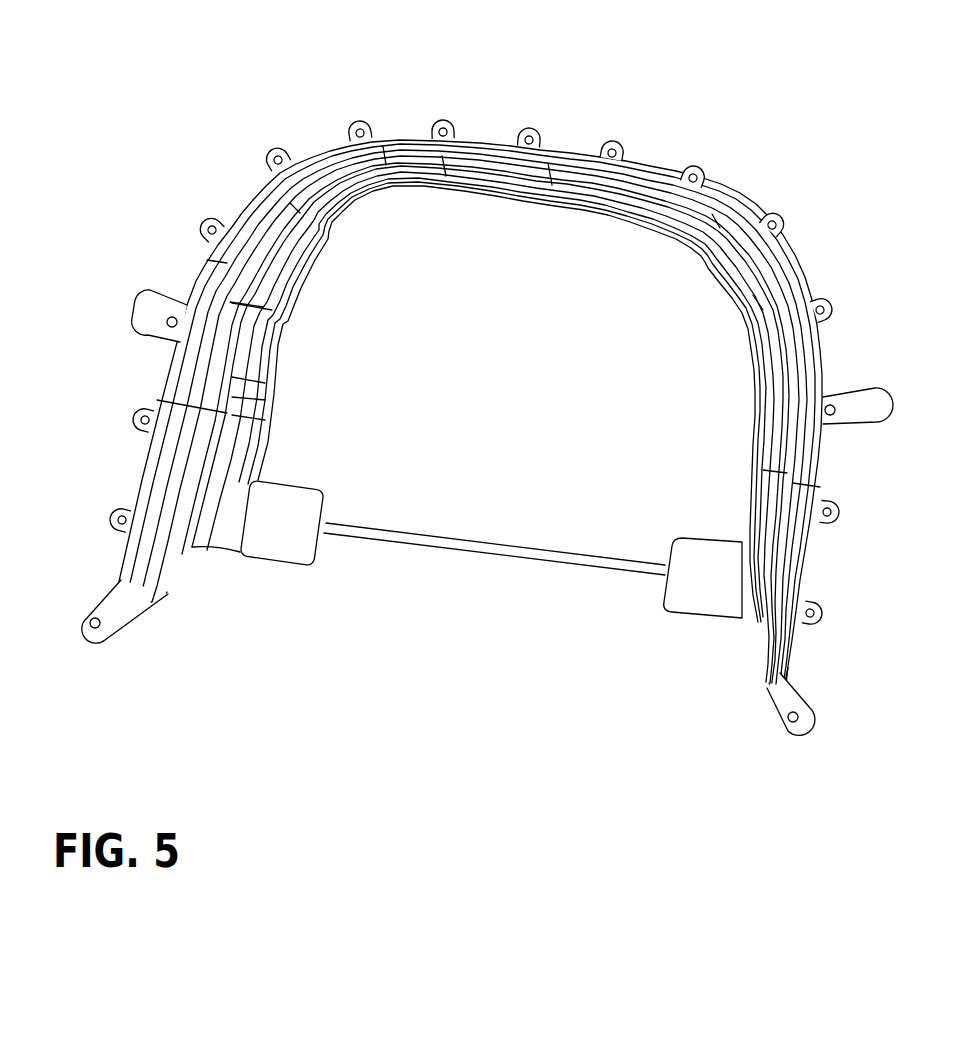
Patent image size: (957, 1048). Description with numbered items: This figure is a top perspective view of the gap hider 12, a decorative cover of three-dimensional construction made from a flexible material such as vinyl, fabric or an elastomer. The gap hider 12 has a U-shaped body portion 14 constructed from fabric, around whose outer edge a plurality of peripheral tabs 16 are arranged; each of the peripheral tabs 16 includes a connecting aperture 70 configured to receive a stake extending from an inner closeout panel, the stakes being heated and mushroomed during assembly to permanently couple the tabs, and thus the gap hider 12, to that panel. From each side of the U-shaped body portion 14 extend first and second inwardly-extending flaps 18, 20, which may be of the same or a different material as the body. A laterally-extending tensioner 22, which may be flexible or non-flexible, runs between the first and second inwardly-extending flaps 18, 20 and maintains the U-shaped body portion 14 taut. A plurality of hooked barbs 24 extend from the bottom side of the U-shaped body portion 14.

The gap hider 12 is at (567, 163).
The U-shaped body portion 14 is at (402, 150).
The peripheral tabs 16 is at (345, 125).
The first inwardly-extending flap 18 is at (290, 545).
The second inwardly-extending flap 20 is at (708, 587).
The tensioner 22 is at (480, 548).
The hooked barbs 24 is at (267, 442).
The connecting aperture 70 is at (360, 122).